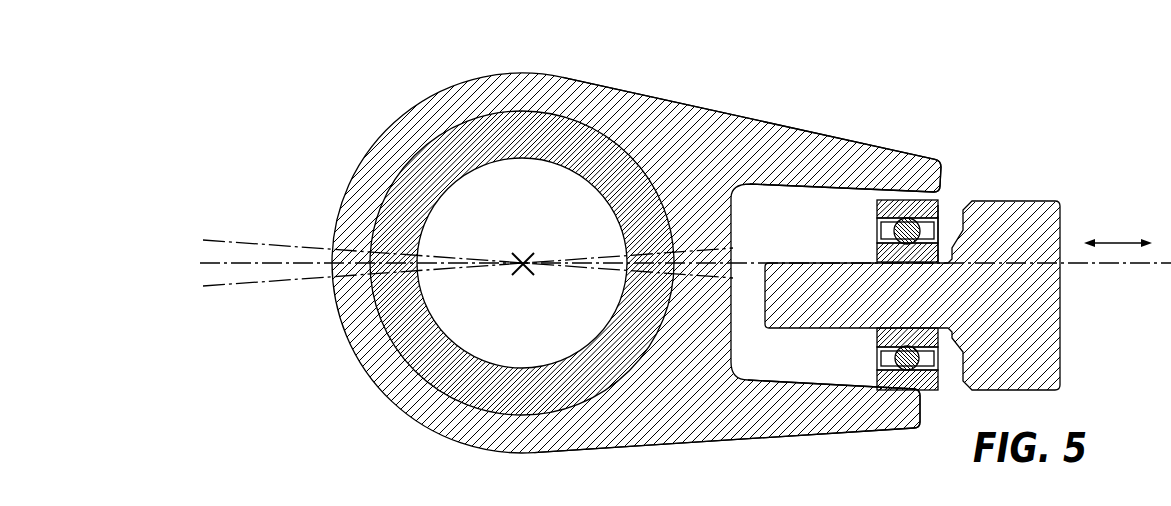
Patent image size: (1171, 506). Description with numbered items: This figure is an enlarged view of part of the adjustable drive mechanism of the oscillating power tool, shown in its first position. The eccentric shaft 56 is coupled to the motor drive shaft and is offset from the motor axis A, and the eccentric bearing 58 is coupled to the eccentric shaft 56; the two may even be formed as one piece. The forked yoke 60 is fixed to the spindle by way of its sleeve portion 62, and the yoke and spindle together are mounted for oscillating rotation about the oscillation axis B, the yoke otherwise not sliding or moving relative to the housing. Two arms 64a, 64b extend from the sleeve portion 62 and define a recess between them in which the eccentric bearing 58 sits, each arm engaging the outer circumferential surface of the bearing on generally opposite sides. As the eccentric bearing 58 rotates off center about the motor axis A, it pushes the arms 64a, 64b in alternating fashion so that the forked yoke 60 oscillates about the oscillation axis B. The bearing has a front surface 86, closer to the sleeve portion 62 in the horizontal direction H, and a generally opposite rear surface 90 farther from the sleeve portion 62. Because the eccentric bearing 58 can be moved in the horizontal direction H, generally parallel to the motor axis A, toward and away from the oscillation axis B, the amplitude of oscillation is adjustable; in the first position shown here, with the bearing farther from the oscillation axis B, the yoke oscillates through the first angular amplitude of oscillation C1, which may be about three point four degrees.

The eccentric shaft 56 is at (1027, 290).
The eccentric bearing 58 is at (875, 340).
The forked yoke 60 is at (593, 88).
The sleeve portion 62 is at (427, 122).
The arm 64a is at (900, 173).
The arm 64b is at (890, 410).
The front surface 86 is at (868, 213).
The rear surface 90 is at (948, 213).
The motor axis A is at (1123, 266).
The oscillation axis B is at (526, 256).
The first angular amplitude of oscillation C1 is at (242, 322).
The horizontal direction H is at (1118, 242).